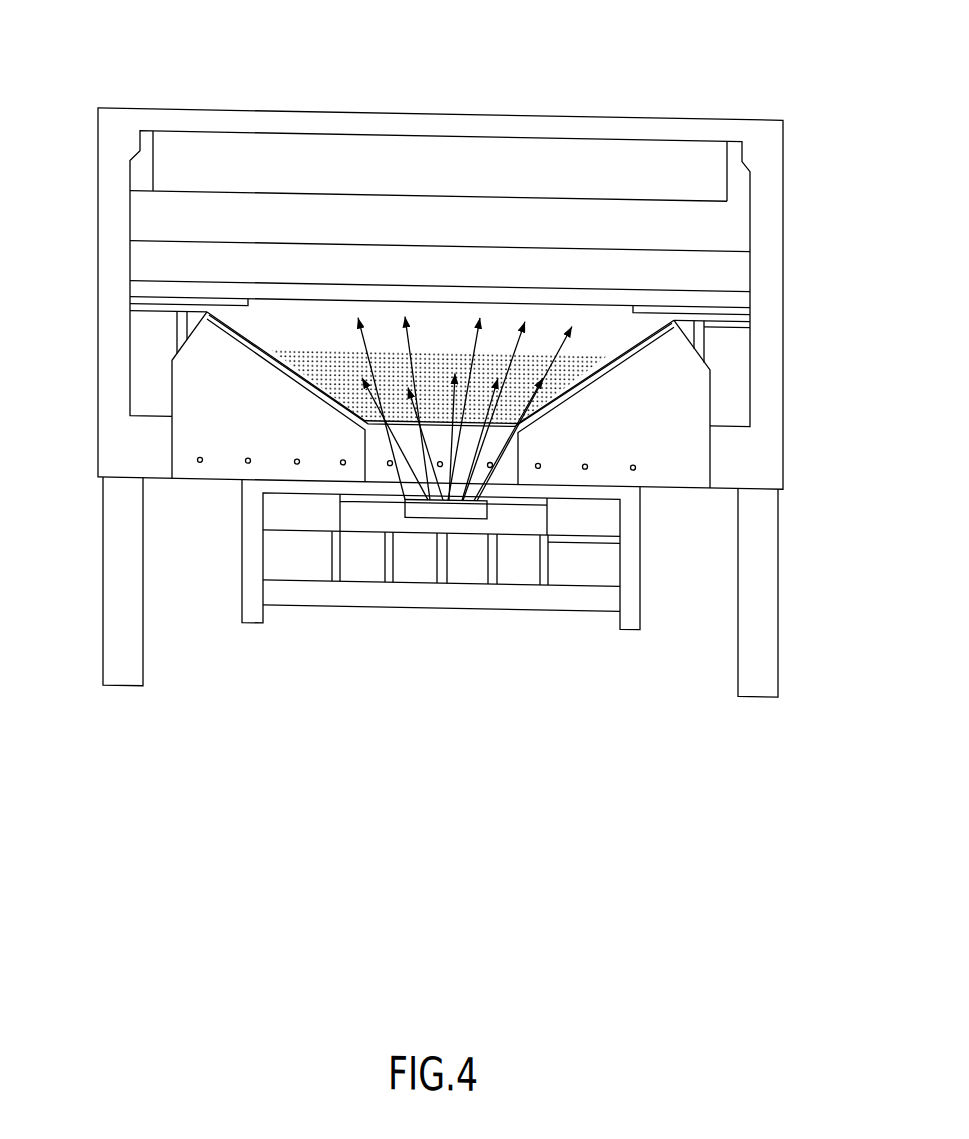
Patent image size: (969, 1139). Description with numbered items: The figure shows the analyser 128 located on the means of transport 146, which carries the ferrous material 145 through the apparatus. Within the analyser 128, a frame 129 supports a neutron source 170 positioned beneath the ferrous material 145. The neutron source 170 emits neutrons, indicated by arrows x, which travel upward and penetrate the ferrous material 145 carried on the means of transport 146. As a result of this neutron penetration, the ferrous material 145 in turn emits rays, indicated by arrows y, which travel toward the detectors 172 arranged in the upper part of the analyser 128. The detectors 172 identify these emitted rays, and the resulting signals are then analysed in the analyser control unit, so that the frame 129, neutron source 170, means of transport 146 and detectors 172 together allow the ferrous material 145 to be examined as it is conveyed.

The analyser 128 is at (784, 78).
The frame 129 is at (758, 605).
The ferrous material 145 is at (440, 356).
The means of transport 146 is at (622, 424).
The neutron source 170 is at (455, 503).
The detectors 172 is at (340, 263).
The arrows x X is at (365, 425).
The arrows y Y is at (507, 361).